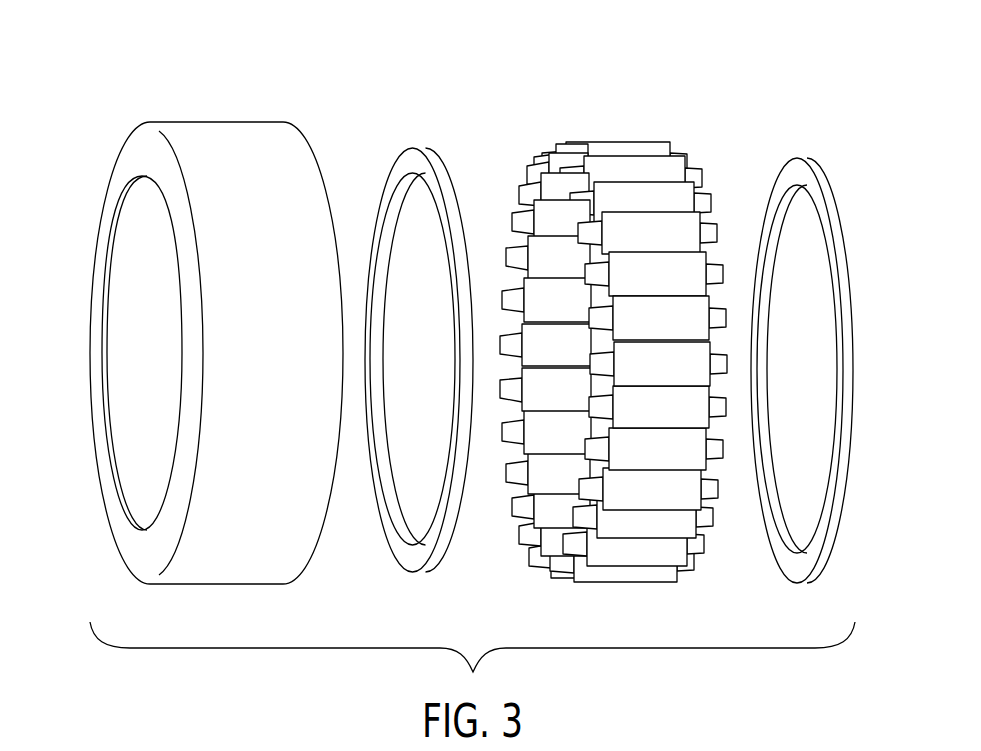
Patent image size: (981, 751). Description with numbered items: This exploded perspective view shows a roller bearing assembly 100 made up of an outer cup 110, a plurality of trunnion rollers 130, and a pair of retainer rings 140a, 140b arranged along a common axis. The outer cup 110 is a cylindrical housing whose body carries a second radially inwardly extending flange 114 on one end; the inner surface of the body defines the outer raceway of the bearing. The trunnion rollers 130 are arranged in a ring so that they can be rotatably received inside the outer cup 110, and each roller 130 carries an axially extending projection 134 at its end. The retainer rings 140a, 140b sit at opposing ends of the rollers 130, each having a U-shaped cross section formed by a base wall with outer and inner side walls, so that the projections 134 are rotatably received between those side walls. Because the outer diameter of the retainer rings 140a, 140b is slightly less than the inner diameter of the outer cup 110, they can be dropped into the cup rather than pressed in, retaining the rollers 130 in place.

The roller bearing assembly 100 is at (850, 64).
The outer cup 110 is at (188, 100).
The second radially inwardly extending flange 114 is at (135, 157).
The trunnion rollers 130 is at (621, 122).
The axially extending projection 134 is at (537, 188).
The first retainer ring 140a is at (798, 155).
The second retainer ring 140b is at (408, 163).